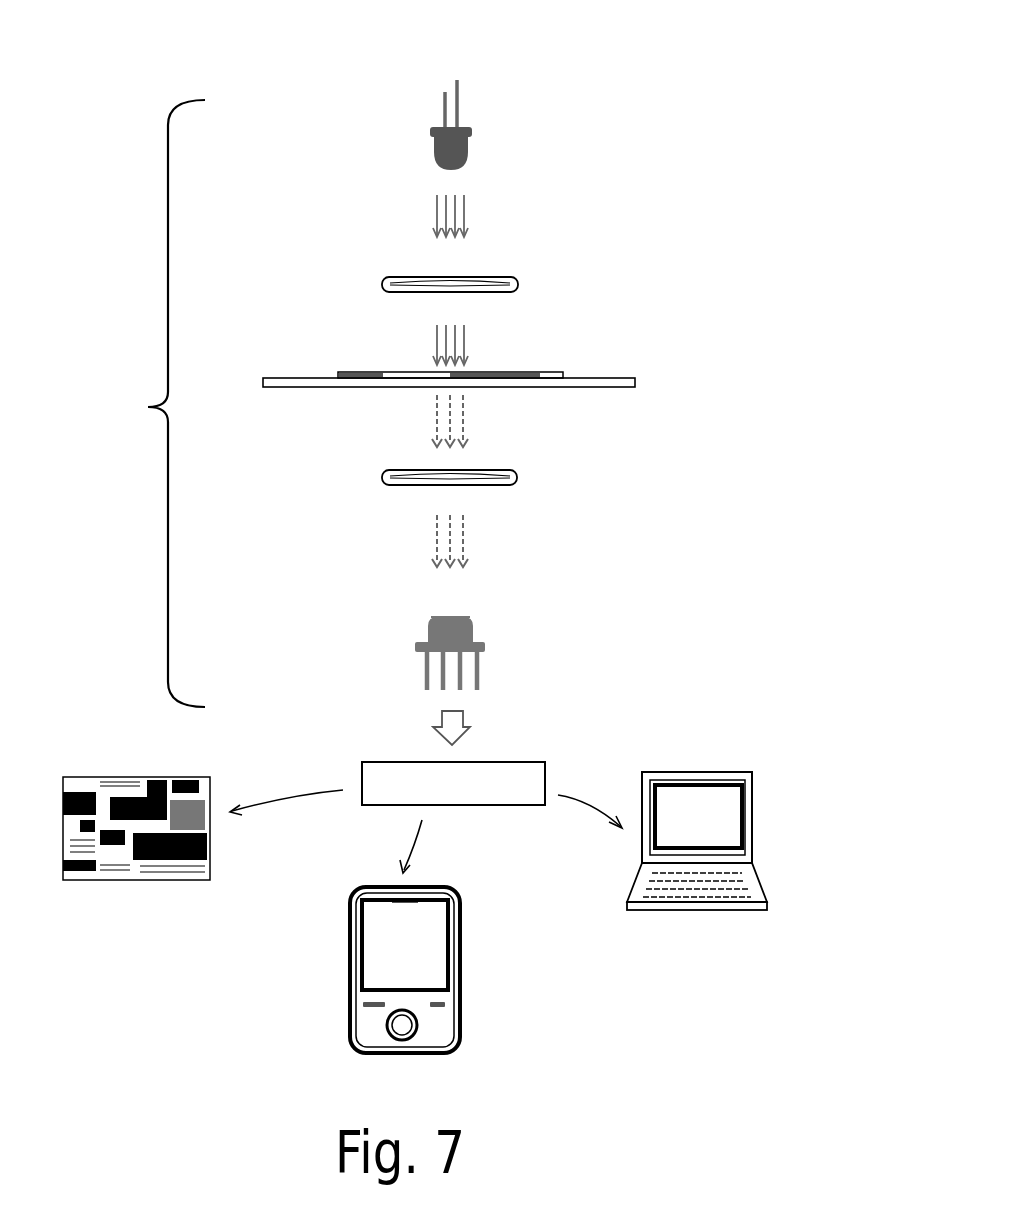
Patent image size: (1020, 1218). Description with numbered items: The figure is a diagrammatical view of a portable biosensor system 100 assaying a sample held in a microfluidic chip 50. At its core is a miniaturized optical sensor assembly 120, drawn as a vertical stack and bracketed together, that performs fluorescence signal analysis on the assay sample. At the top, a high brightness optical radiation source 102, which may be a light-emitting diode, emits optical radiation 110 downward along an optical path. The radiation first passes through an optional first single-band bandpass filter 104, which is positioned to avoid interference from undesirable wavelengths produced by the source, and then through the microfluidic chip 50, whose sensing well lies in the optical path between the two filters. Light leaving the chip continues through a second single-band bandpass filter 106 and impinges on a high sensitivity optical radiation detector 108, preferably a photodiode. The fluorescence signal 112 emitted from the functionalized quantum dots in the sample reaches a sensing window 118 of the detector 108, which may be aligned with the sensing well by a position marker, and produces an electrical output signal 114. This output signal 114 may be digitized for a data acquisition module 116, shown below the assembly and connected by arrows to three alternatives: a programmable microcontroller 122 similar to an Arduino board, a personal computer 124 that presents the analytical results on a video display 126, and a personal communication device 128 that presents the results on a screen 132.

The biosensor system 100 is at (588, 57).
The optical radiation source 102 is at (478, 147).
The first single-band bandpass filter 104 is at (508, 275).
The microfluidic chip 50 is at (512, 368).
The second single-band bandpass filter 106 is at (512, 474).
The optical radiation detector 108 is at (478, 632).
The optical radiation 110 is at (430, 212).
The fluorescence signal 112 is at (426, 531).
The output signal 114 is at (433, 724).
The data acquisition module 116 is at (522, 762).
The sensing window 118 is at (444, 617).
The optical sensor assembly 120 is at (146, 403).
The programmable microcontroller 122 is at (187, 882).
The personal computer 124 is at (748, 787).
The video display 126 is at (725, 817).
The personal communication device 128 is at (453, 892).
The screen 132 is at (435, 948).